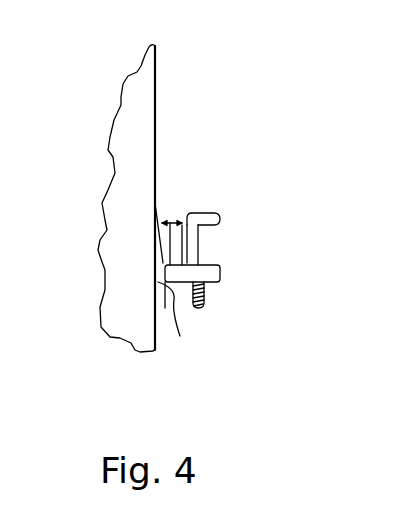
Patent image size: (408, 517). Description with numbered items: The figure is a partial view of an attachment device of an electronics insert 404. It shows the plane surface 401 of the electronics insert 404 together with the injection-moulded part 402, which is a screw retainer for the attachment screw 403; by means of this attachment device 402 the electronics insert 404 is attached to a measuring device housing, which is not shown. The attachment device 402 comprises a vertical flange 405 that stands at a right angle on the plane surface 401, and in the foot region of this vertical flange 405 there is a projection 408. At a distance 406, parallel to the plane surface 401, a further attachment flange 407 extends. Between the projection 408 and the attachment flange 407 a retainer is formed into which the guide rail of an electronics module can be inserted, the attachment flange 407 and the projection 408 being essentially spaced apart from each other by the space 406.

The plane surface 401 is at (157, 107).
The injection-moulded part 402 is at (270, 202).
The attachment screw 403 is at (205, 295).
The electronics insert 404 is at (275, 78).
The vertical flange 405 is at (192, 317).
The distance 406 is at (172, 222).
The attachment flange 407 is at (198, 233).
The projection 408 is at (159, 255).